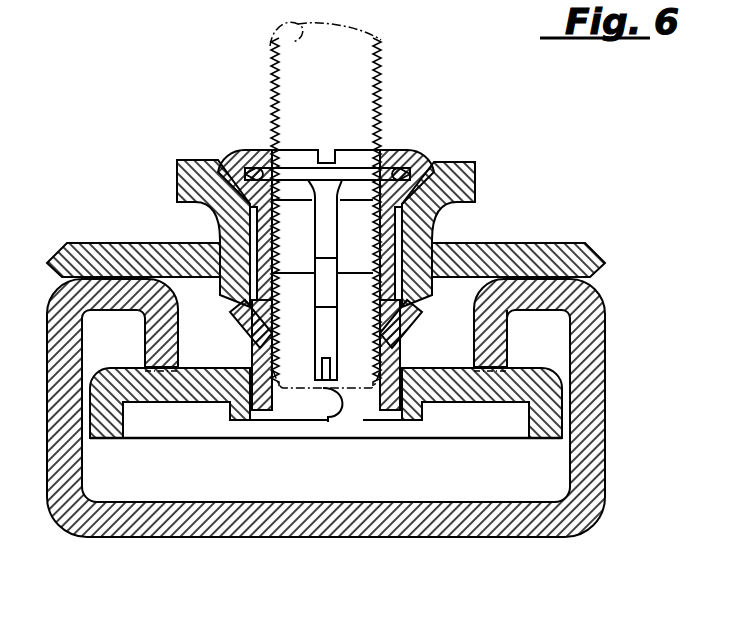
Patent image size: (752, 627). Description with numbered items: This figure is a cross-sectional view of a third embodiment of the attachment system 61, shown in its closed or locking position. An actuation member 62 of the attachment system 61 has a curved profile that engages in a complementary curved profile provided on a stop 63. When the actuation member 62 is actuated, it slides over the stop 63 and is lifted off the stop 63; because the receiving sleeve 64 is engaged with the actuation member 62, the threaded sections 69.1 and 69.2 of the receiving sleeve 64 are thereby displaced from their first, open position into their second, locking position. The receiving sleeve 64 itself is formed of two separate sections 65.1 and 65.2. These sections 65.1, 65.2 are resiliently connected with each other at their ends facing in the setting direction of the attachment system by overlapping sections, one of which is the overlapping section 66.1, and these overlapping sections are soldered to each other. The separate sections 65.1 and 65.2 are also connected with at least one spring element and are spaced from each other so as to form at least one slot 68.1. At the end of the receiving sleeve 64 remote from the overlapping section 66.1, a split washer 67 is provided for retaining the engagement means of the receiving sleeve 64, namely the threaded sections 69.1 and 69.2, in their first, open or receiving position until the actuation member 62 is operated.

The attachment system 61 is at (453, 88).
The actuation member 62 is at (474, 168).
The stop 63 is at (564, 254).
The receiving sleeve 64 is at (218, 152).
The section of the receiving sleeve 65.1 is at (258, 338).
The section of the receiving sleeve 65.2 is at (394, 338).
The overlapping section 66.1 is at (330, 388).
The split washer 67 is at (250, 168).
The slot 68.1 is at (327, 343).
The threaded section 69.1 is at (283, 230).
The threaded section 69.2 is at (378, 228).